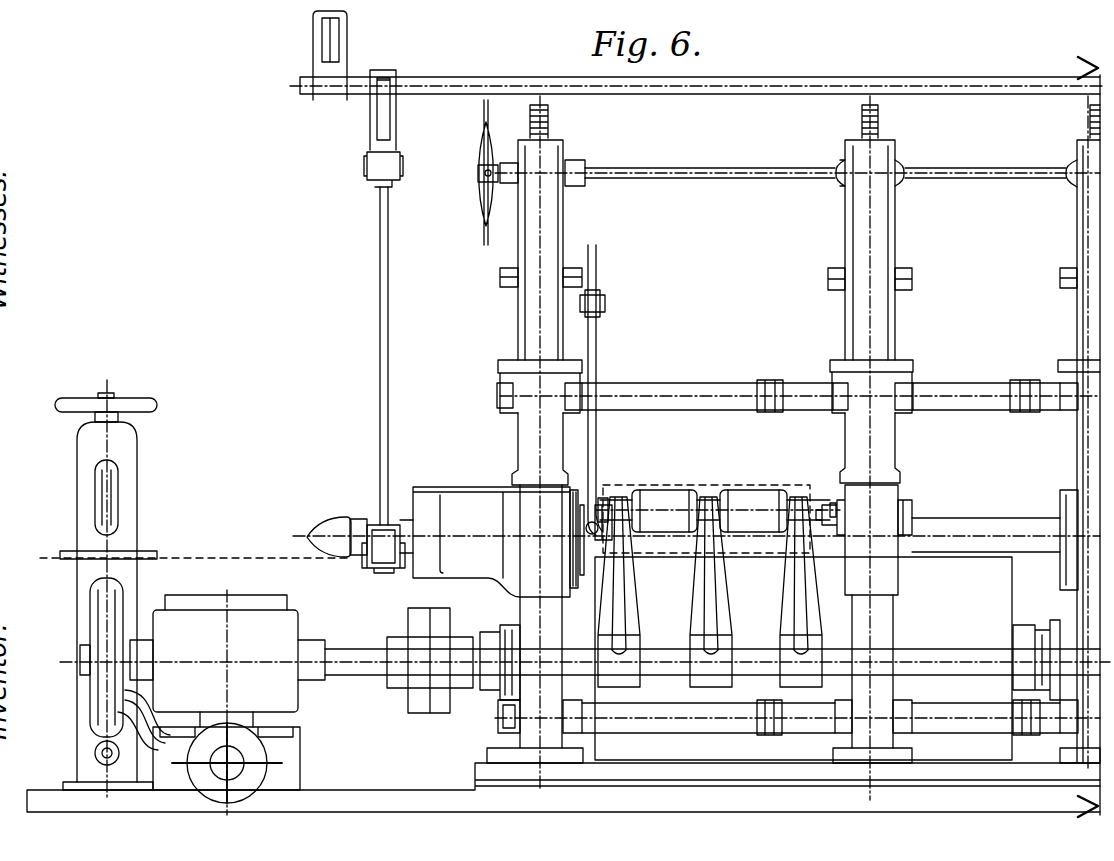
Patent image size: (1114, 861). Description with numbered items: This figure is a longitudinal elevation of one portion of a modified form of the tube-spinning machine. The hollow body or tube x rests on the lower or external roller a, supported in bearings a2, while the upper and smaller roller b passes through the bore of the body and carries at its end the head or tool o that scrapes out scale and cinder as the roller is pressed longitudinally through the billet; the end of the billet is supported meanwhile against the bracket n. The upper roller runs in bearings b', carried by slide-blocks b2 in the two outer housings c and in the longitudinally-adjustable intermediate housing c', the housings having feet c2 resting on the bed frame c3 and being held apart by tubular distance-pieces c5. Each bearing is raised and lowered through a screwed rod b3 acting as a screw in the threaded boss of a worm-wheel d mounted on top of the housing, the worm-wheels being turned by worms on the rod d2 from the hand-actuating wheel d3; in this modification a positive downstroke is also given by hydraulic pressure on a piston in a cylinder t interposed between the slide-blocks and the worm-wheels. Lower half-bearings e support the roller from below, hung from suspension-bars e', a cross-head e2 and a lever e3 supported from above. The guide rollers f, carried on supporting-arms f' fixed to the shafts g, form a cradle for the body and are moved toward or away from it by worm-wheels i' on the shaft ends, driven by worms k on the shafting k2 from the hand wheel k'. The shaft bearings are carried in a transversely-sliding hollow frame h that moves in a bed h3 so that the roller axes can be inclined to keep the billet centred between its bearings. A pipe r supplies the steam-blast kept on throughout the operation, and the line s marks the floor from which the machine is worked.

The lower or external roller a is at (803, 658).
The bearings a2 is at (510, 632).
The upper and smaller roller b is at (696, 518).
The half-bearings b' is at (754, 556).
The slide-blocks b2 is at (838, 493).
The screwed rods b3 is at (549, 116).
The outer frames or housings c is at (800, 443).
The intermediate housing or frame c' is at (868, 448).
The feet c2 is at (510, 757).
The longitudinal bed frame or girder c3 is at (600, 782).
The tubular distance-pieces c5 is at (699, 393).
The worm-wheels d is at (576, 166).
The rod d2 is at (740, 169).
The hand-actuating wheel d3 is at (483, 190).
The half-bearings e is at (370, 557).
The suspension-bars e' is at (367, 356).
The cross-head e2 is at (375, 164).
The lever e3 is at (397, 100).
The guide or external side supporting-rollers f is at (718, 568).
The supporting-arms f' is at (665, 592).
The shafts g is at (80, 670).
The transversely-sliding hollow beam or frame h is at (239, 702).
The bed h3 is at (290, 752).
The worm-wheels i' is at (99, 590).
The worms k is at (108, 733).
The hand actuating-wheel k' is at (104, 397).
The shafting k2 is at (108, 497).
The bracket n is at (471, 495).
The head or tool o is at (330, 520).
The pipe r is at (596, 330).
The floor line s is at (190, 549).
The cylinders t is at (505, 283).
The hollow body or tube x is at (645, 486).